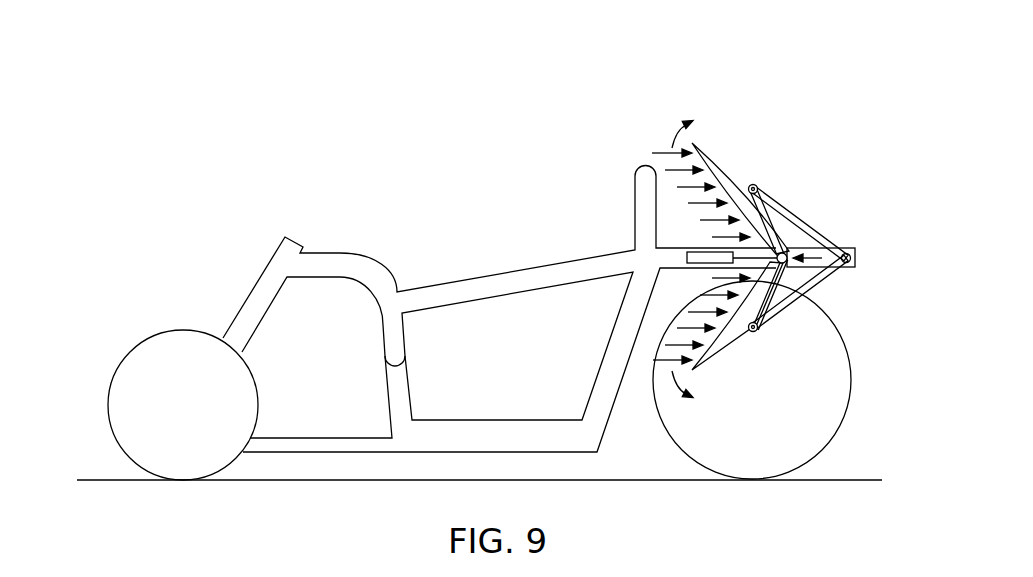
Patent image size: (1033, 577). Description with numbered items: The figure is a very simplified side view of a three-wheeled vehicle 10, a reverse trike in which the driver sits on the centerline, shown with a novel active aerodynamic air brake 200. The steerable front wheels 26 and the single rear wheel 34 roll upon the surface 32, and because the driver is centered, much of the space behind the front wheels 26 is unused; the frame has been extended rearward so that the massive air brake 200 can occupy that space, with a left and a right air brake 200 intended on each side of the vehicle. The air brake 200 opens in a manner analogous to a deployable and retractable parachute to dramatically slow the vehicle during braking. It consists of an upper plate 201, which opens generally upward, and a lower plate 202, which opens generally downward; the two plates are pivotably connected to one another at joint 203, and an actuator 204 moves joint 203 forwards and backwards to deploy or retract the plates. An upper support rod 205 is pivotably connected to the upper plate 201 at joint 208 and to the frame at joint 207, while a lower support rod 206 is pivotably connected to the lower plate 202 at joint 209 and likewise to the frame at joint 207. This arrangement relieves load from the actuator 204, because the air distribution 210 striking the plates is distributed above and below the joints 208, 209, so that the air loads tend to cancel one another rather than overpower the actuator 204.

The three-wheeled vehicle 10 is at (425, 153).
The steerable front wheels 26 is at (161, 397).
The surface 32 is at (456, 456).
The rear wheel 34 is at (851, 406).
The air brake 200 is at (869, 88).
The upper plate 201 is at (741, 184).
The lower plate 202 is at (722, 357).
The joint 203 is at (786, 253).
The actuator 204 is at (694, 250).
The upper support rod 205 is at (823, 235).
The lower support rod 206 is at (830, 283).
The joint 207 is at (857, 252).
The joint 208 is at (788, 171).
The joint 209 is at (758, 329).
The air distribution 210 is at (661, 239).